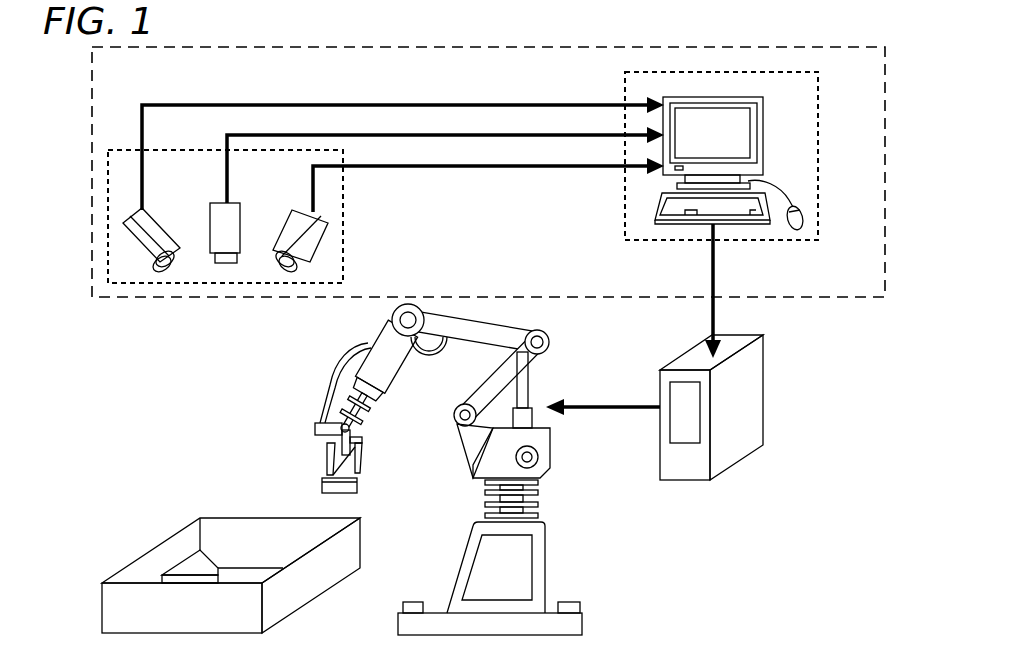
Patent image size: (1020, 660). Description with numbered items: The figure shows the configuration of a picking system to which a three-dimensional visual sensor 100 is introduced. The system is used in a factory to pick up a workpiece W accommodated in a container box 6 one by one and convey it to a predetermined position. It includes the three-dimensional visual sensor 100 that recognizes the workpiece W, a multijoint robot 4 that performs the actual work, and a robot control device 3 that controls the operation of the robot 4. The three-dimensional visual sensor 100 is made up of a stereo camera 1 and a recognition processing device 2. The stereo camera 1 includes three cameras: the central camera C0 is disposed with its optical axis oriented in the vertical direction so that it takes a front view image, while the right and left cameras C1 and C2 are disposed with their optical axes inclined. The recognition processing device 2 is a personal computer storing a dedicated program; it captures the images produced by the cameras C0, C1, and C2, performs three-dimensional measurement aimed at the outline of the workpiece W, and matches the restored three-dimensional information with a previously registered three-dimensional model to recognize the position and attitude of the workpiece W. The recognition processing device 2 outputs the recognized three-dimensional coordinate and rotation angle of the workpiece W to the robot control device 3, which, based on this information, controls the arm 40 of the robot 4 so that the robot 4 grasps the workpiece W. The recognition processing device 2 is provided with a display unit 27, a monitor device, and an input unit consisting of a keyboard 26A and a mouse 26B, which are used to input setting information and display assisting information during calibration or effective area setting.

The three-dimensional visual sensor 100 is at (747, 43).
The stereo camera 1 is at (344, 215).
The central camera C0 is at (243, 246).
The left camera C1 is at (157, 218).
The right camera C2 is at (289, 214).
The recognition processing device 2 is at (819, 88).
The display unit 27 is at (743, 132).
The keyboard 26A is at (752, 224).
The mouse 26B is at (800, 220).
The robot control device 3 is at (750, 387).
The multijoint robot 4 is at (474, 469).
The arm 40 is at (517, 328).
The container box 6 is at (242, 517).
The workpiece W is at (203, 558).